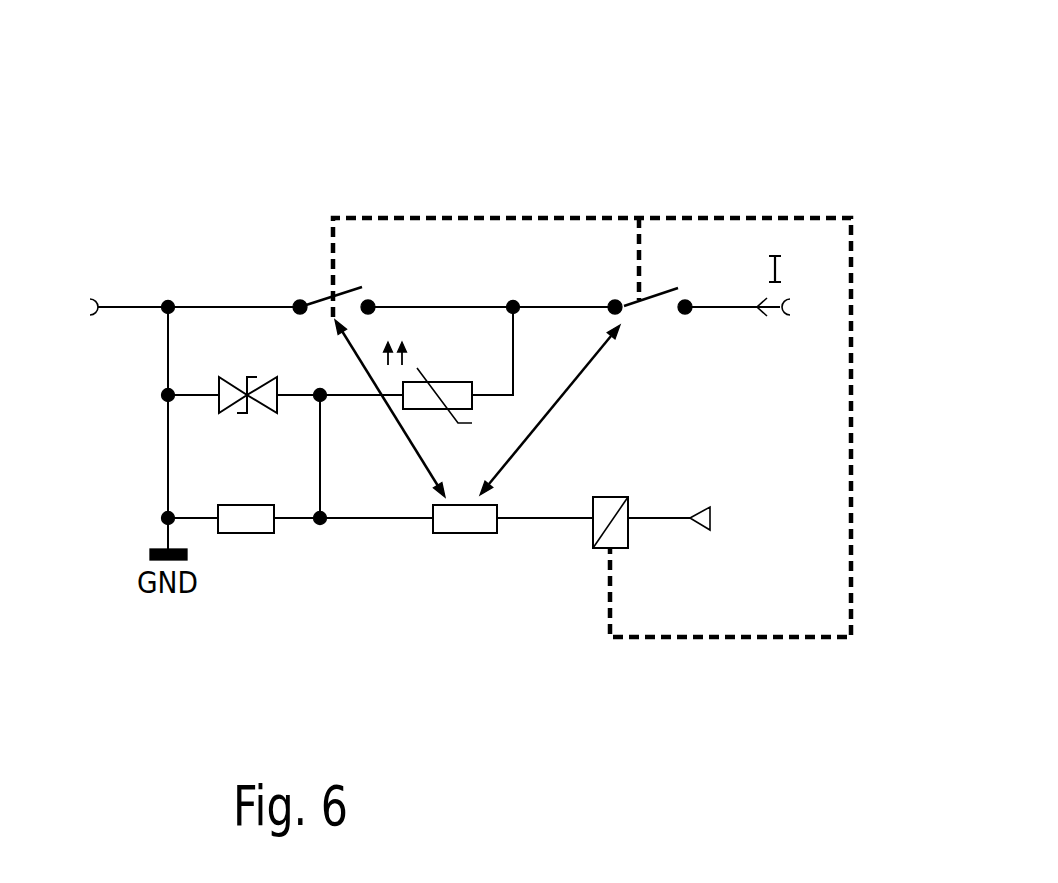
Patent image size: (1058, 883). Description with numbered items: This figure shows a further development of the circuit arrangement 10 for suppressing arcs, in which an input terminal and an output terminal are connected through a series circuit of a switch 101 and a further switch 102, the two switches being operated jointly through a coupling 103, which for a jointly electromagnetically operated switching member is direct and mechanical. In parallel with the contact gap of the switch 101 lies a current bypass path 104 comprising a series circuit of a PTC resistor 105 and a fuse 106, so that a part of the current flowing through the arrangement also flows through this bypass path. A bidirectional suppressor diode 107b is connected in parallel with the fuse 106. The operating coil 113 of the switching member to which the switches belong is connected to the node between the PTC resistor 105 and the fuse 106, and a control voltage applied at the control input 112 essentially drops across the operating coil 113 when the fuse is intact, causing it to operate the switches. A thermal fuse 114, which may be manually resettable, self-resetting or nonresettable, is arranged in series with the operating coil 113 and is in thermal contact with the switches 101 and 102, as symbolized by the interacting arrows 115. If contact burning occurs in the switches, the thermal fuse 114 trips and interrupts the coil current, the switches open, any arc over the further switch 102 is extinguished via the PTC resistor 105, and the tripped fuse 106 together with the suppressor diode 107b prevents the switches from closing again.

The circuit arrangement 10 is at (694, 131).
The switch 101 is at (314, 302).
The further switch 102 is at (640, 300).
The coupling 103 is at (807, 217).
The current bypass path 104 is at (513, 360).
The PTC resistor 105 is at (432, 375).
The fuse 106 is at (267, 534).
The bidirectional suppressor diode 107b is at (230, 383).
The control input 112 is at (710, 523).
The operating coil 113 is at (612, 497).
The thermal fuse 114 is at (448, 535).
The interacting arrows 115 is at (520, 440).